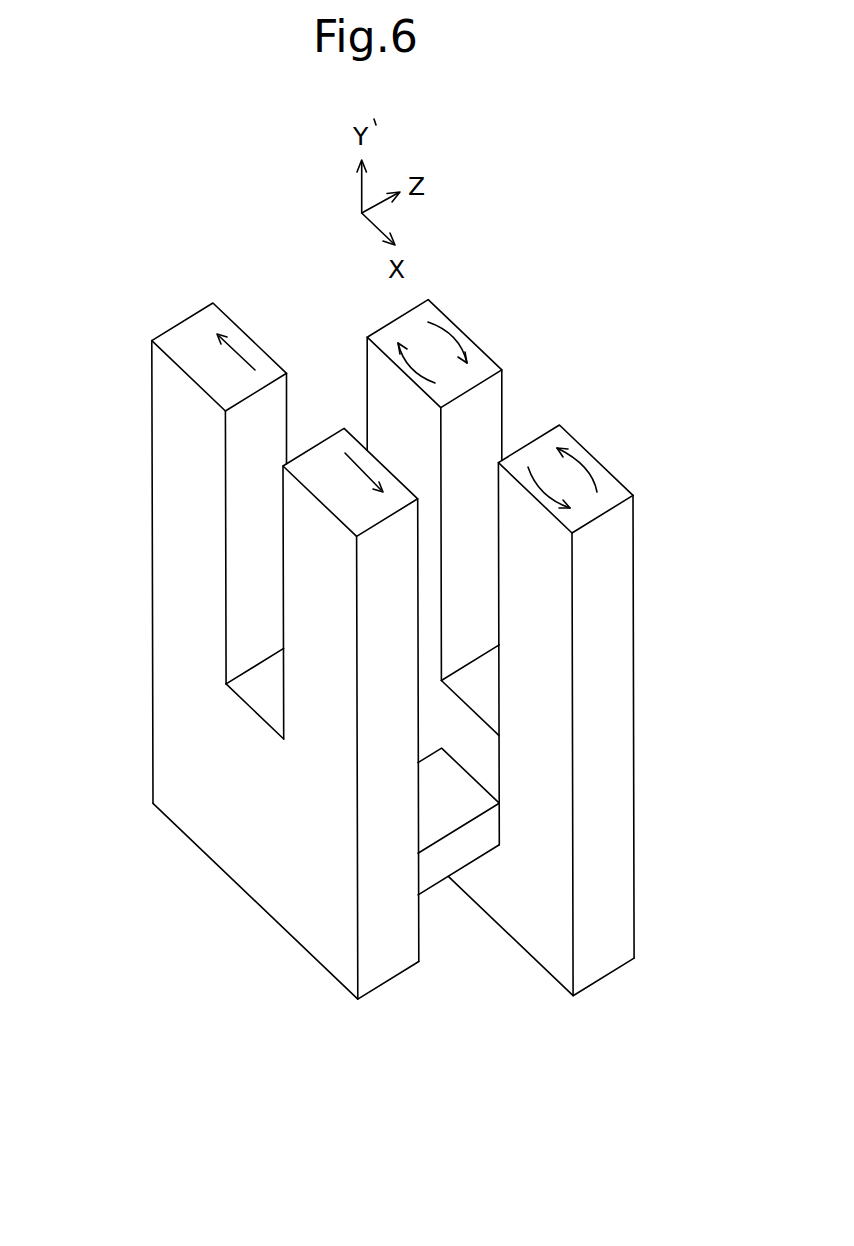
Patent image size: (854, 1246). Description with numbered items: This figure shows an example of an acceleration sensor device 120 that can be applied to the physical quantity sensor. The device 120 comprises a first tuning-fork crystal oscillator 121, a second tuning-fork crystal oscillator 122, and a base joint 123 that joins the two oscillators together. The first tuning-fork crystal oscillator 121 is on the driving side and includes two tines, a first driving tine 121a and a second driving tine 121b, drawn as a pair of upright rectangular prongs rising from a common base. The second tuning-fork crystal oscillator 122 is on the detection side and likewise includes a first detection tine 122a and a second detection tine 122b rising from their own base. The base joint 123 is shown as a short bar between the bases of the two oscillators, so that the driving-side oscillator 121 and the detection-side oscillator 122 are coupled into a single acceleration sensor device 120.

The device 120 is at (488, 214).
The first tuning-fork crystal oscillator 121 is at (597, 1000).
The first driving tine 121a is at (483, 352).
The second driving tine 121b is at (608, 487).
The second tuning-fork crystal oscillator 122 is at (337, 993).
The first detection tine 122a is at (192, 360).
The second detection tine 122b is at (327, 487).
The base joint 123 is at (435, 875).